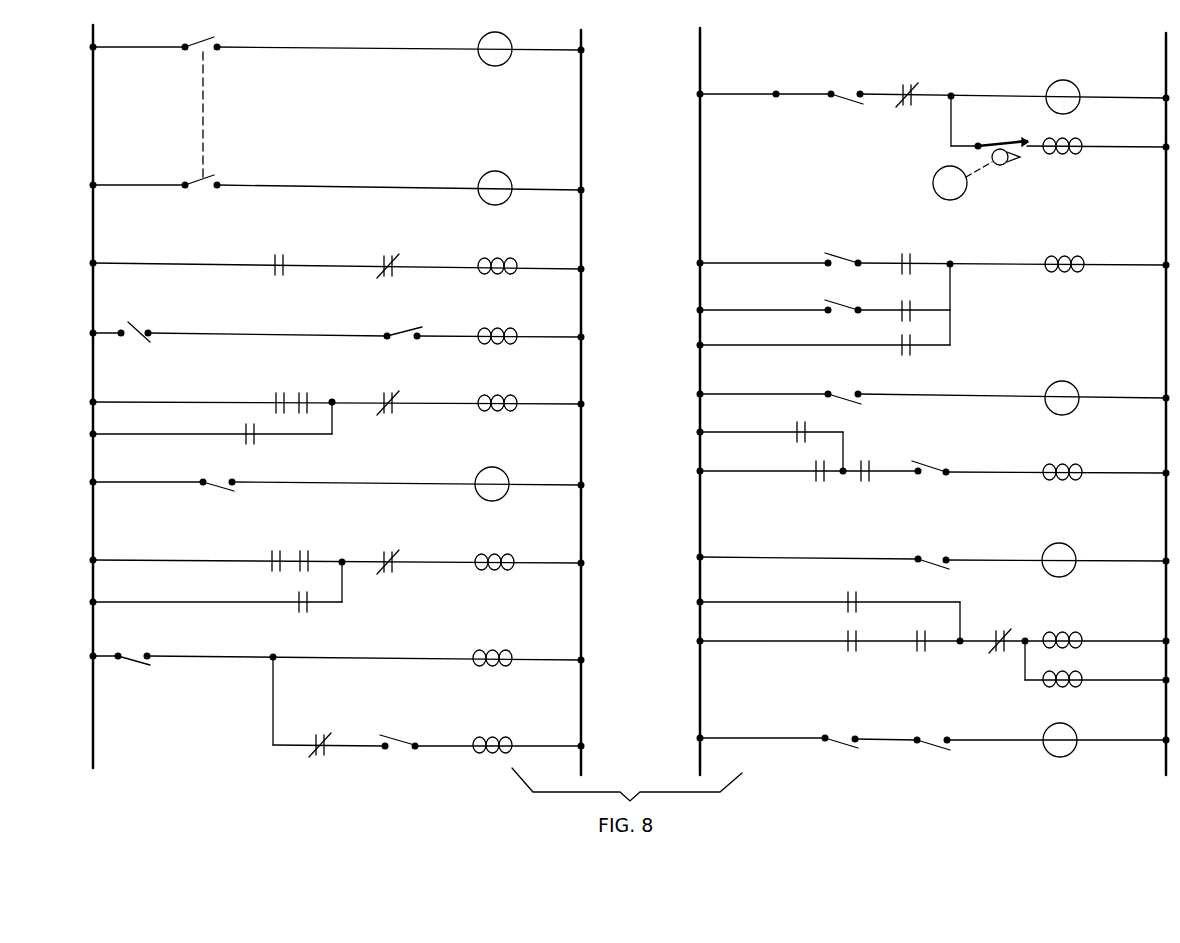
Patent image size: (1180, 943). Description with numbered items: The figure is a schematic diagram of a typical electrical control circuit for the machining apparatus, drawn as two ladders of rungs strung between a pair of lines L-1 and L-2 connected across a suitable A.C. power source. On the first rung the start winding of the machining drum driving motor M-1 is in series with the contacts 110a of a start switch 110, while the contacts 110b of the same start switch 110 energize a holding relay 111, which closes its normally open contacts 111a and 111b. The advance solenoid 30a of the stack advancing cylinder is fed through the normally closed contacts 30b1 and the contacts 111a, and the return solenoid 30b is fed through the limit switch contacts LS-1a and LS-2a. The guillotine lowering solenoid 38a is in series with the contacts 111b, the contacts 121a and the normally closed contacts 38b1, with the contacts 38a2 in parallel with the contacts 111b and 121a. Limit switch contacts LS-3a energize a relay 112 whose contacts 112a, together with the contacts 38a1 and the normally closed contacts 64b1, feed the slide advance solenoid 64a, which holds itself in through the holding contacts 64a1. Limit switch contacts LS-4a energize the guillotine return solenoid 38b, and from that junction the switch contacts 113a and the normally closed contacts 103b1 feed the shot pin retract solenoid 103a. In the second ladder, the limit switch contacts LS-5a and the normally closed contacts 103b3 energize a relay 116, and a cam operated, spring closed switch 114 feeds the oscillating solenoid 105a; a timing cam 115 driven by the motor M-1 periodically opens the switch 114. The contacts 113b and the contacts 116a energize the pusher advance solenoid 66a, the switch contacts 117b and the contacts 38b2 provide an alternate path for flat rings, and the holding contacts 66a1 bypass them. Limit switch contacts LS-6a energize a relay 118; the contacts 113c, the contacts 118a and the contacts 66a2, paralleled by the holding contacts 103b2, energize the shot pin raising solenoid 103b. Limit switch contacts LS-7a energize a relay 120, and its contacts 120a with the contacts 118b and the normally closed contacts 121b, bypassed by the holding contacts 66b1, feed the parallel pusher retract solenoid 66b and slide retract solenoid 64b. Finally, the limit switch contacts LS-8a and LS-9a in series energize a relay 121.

The line L-1 is at (88, 46).
The line L-2 is at (583, 48).
The contacts of start switch 110a is at (213, 47).
The start switch 110 is at (203, 126).
The contacts of start switch 110b is at (213, 174).
The machining drum driving motor M-1 is at (479, 58).
The holding relay 111 is at (502, 177).
The normally open contacts 111a is at (279, 253).
The normally closed contacts 30b1 is at (388, 253).
The advance solenoid 30a is at (499, 258).
The normally open contacts of limit switch LS-1a is at (137, 332).
The normally closed contacts of limit switch LS-2a is at (405, 332).
The return solenoid 30b is at (504, 346).
The normally open contacts 111b is at (280, 394).
The normally open contacts 121a is at (304, 393).
The normally closed contacts 38b1 is at (390, 393).
The advance solenoid 38a is at (498, 396).
The normally open contacts 38a2 is at (243, 428).
The normally open contacts of limit switch LS-3a is at (217, 480).
The relay 112 is at (505, 470).
The normally open contacts 38a1 is at (272, 548).
The normally open contacts 112a is at (306, 547).
The normally closed contacts 64b1 is at (392, 548).
The solenoid 64a is at (495, 557).
The normally open holding contacts 64a1 is at (307, 612).
The normally open contacts of limit switch LS-4a is at (133, 652).
The retract solenoid 38b is at (492, 652).
The normally closed contacts 103b1 is at (318, 726).
The normally open switch contacts 113a is at (406, 727).
The solenoid 103a is at (492, 735).
The normally open contacts of limit switch LS-5a is at (834, 102).
The normally closed contacts 103b3 is at (910, 70).
The relay 116 is at (1074, 90).
The cam operated, spring closed switch 114 is at (990, 144).
The solenoid 105a is at (1064, 154).
The timing cam 115 is at (1000, 166).
The normally open switch contacts 113b is at (840, 260).
The normally open contacts 116a is at (910, 256).
The solenoid 66a is at (1062, 262).
The switch contacts 117b is at (834, 299).
The normally open contacts 38b2 is at (904, 294).
The holding contacts 66a1 is at (914, 354).
The normally open contacts of limit switch LS-6a is at (850, 396).
The relay 118 is at (1074, 386).
The normally open holding contacts 103b2 is at (798, 426).
The normally open contacts 66a2 is at (818, 482).
The normally open contacts 118a is at (866, 462).
The normally open switch contacts 113c is at (927, 464).
The solenoid 103b is at (1056, 470).
The normally open contacts of limit switch LS-7a is at (955, 538).
The relay 120 is at (1076, 550).
The normally open holding contacts 66b1 is at (854, 602).
The normally open contacts 120a is at (852, 652).
The normally open contacts 118b is at (926, 652).
The normally closed contacts 121b is at (998, 630).
The pusher retract solenoid 66b is at (1068, 640).
The slide retract solenoid 64b is at (1068, 680).
The normally open contacts of limit switch LS-8a is at (852, 722).
The normally open contacts of limit switch LS-9a is at (930, 736).
The relay 121 is at (1076, 730).